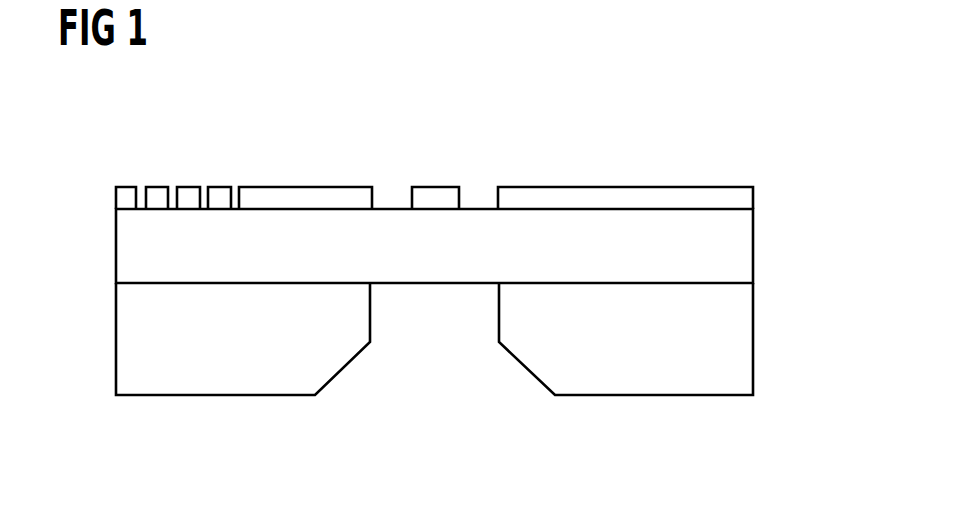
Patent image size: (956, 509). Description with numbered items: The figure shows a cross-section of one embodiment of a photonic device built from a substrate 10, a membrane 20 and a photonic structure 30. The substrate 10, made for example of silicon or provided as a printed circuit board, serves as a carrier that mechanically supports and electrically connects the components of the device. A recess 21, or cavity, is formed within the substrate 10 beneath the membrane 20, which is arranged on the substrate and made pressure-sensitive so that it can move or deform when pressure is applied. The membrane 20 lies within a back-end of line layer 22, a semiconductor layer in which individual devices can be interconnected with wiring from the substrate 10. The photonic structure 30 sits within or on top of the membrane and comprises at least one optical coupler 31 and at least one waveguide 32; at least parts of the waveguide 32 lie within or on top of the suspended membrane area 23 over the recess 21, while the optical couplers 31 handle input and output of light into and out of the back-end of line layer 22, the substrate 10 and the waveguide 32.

The substrate 10 is at (130, 343).
The membrane 20 is at (435, 341).
The recess 21 is at (435, 330).
The back-end of line layer 22 is at (742, 250).
The suspended membrane area 23 is at (555, 420).
The photonic structure 30 is at (435, 146).
The optical coupler 31 is at (120, 200).
The waveguide 32 is at (435, 168).